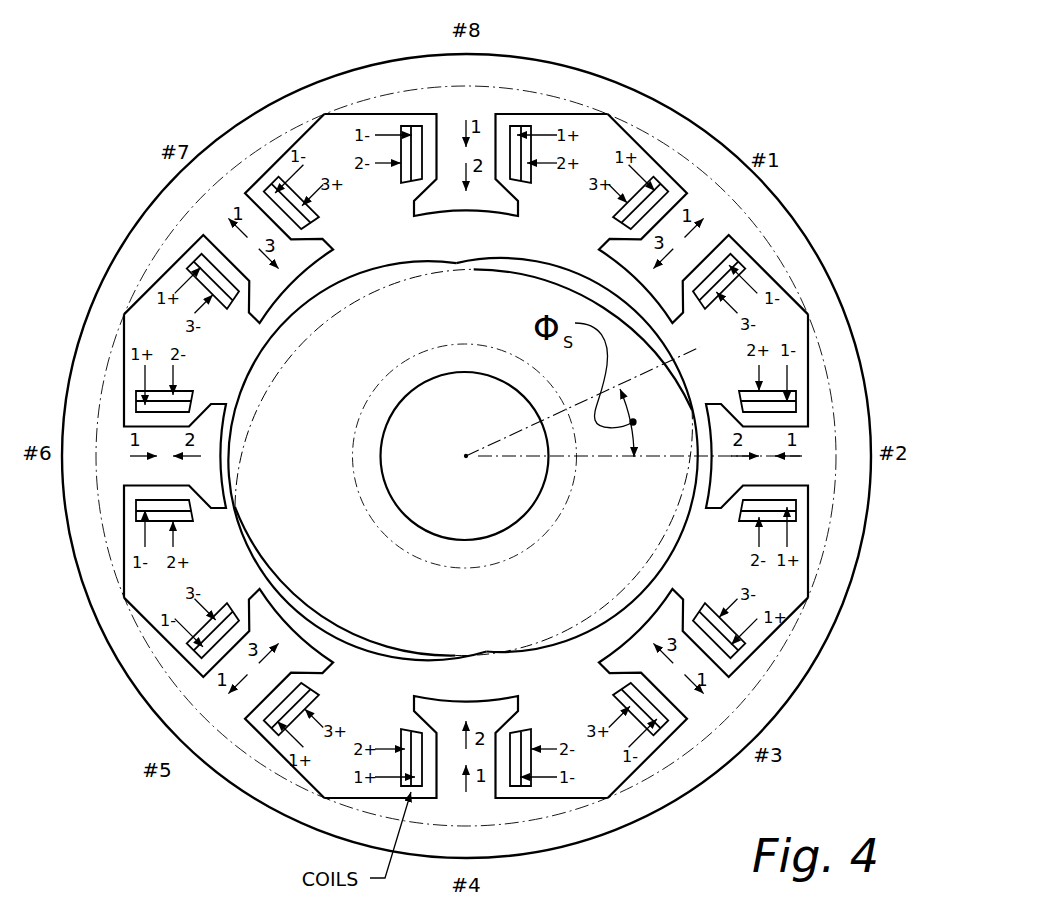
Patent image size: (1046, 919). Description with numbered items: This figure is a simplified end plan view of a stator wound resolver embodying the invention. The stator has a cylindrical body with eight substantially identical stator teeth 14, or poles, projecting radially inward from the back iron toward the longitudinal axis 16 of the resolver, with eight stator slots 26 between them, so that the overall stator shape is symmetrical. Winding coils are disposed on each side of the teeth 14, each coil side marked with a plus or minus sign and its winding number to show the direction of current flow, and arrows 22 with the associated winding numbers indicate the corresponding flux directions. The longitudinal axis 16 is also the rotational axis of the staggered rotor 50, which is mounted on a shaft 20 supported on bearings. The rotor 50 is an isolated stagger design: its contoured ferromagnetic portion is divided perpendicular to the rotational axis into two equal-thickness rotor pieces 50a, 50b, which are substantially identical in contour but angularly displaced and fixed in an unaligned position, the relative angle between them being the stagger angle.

The stator teeth 14 is at (330, 268).
The longitudinal axis 16 is at (466, 456).
The shaft 20 is at (479, 510).
The arrows 22 is at (463, 187).
The stator slots 26 is at (600, 140).
The staggered rotor 50 is at (374, 464).
The rotor piece 50a is at (333, 645).
The rotor piece 50b is at (545, 262).